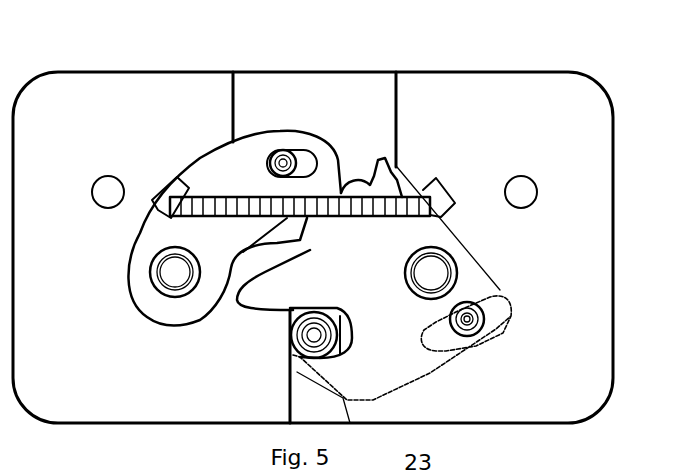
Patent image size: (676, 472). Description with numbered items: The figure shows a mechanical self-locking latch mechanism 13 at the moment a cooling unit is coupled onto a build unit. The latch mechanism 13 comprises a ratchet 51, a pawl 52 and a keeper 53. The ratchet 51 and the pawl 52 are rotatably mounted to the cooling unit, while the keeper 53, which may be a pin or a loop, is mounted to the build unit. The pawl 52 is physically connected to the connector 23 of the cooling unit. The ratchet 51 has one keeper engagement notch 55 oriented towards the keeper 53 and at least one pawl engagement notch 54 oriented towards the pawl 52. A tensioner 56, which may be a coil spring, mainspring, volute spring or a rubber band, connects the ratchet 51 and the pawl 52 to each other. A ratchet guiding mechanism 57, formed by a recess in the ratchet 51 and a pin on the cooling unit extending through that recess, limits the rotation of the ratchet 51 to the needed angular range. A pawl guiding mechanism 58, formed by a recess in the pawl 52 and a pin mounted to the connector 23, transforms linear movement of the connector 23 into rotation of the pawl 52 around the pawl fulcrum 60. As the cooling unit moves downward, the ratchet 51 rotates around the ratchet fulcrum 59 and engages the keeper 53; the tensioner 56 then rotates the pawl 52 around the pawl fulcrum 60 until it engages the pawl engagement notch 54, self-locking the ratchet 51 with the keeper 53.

The self-locking latch mechanism 13 is at (528, 115).
The connector 23 is at (356, 98).
The ratchet 51 is at (433, 374).
The pawl 52 is at (137, 235).
The keeper 53 is at (292, 336).
The pawl engagement notch 54 is at (349, 190).
The keeper engagement notch 55 is at (353, 338).
The tensioner 56 is at (235, 195).
The ratchet guiding mechanism 57 is at (489, 298).
The pawl guiding mechanism 58 is at (290, 153).
The ratchet fulcrum 59 is at (456, 260).
The pawl fulcrum 60 is at (157, 273).